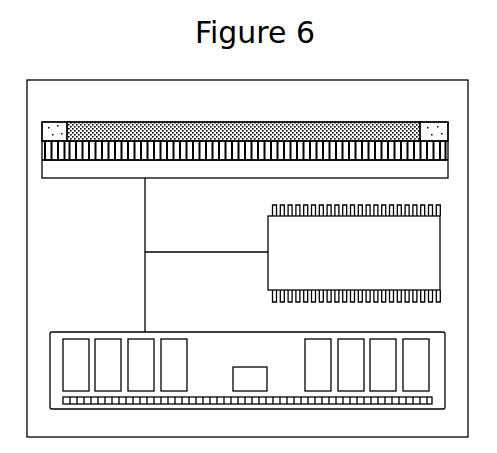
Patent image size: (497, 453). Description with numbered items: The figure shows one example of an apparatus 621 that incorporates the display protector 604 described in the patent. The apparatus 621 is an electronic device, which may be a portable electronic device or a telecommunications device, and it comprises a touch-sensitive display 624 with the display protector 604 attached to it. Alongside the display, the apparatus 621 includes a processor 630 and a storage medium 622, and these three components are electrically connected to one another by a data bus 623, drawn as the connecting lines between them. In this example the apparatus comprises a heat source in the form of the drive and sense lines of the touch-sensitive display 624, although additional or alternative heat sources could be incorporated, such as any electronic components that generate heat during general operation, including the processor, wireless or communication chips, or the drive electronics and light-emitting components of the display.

The display protector 604 is at (237, 128).
The apparatus 621 is at (248, 114).
The touch-sensitive display 624 is at (192, 168).
The data bus 623 is at (143, 297).
The processor 630 is at (354, 253).
The storage medium 622 is at (250, 366).